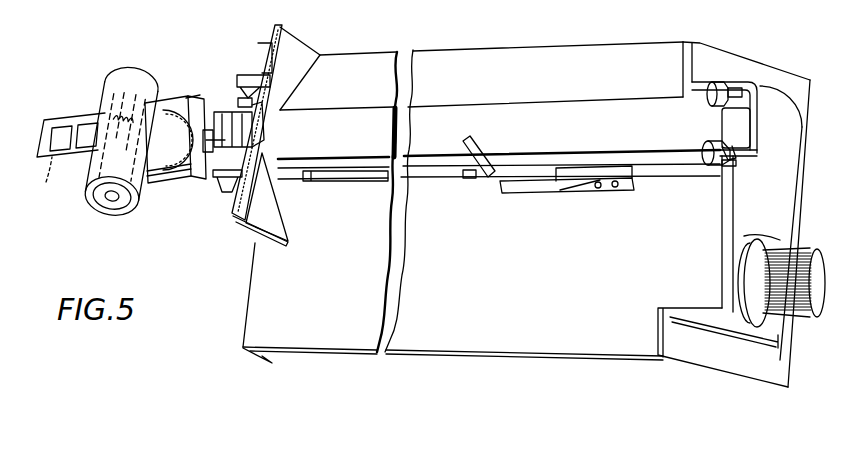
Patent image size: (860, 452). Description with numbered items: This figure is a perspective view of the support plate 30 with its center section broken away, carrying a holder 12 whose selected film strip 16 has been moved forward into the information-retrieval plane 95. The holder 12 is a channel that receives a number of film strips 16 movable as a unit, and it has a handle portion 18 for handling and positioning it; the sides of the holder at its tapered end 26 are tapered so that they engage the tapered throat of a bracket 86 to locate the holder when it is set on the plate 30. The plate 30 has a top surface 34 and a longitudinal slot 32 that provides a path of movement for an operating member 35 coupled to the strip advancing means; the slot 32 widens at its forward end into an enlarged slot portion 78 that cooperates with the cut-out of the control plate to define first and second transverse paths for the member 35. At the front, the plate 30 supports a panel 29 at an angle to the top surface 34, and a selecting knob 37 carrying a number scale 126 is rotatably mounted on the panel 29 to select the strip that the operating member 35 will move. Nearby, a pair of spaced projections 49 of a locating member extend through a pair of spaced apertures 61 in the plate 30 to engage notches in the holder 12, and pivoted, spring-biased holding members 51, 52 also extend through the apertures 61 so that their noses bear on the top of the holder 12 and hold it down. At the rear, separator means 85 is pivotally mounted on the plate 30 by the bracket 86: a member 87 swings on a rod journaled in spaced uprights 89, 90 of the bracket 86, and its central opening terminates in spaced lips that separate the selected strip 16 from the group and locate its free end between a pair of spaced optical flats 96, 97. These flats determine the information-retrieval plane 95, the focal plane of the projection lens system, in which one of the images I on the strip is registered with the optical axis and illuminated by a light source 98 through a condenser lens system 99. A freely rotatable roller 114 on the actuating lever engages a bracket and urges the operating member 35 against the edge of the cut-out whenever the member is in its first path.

The holder 12 is at (517, 110).
The film strips 16 is at (50, 120).
The handle portion 18 is at (763, 100).
The tapered end 26 is at (288, 108).
The panel 29 is at (758, 370).
The plate 30 is at (506, 347).
The slot 32 is at (328, 181).
The top surface 34 is at (515, 280).
The operating member 35 is at (468, 170).
The selecting knob 37 is at (800, 250).
The projections 49 is at (707, 91).
The holding member 51 is at (734, 87).
The holding member 52 is at (727, 167).
The apertures 61 is at (710, 166).
The enlarged slot portion 78 is at (553, 193).
The separator means 85 is at (226, 99).
The bracket 86 is at (258, 241).
The member 87 is at (242, 73).
The upright 89 is at (238, 97).
The upright 90 is at (224, 178).
The information-retrieval plane 95 is at (163, 192).
The optical flat 96 is at (190, 184).
The optical flat 97 is at (185, 98).
The light source 98 is at (110, 73).
The condenser lens system 99 is at (153, 180).
The roller 114 is at (613, 190).
The number scale 126 is at (748, 258).
The images I is at (45, 178).